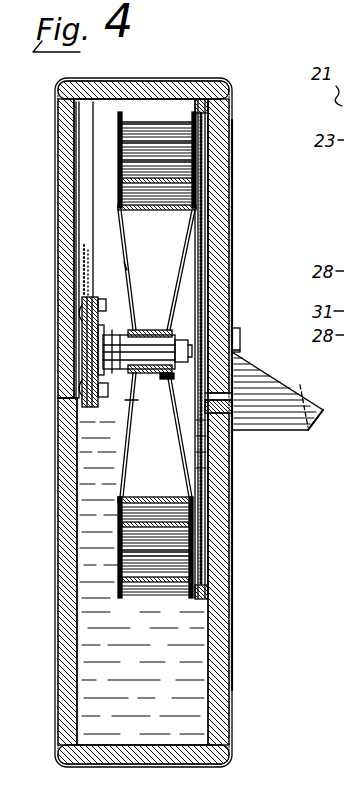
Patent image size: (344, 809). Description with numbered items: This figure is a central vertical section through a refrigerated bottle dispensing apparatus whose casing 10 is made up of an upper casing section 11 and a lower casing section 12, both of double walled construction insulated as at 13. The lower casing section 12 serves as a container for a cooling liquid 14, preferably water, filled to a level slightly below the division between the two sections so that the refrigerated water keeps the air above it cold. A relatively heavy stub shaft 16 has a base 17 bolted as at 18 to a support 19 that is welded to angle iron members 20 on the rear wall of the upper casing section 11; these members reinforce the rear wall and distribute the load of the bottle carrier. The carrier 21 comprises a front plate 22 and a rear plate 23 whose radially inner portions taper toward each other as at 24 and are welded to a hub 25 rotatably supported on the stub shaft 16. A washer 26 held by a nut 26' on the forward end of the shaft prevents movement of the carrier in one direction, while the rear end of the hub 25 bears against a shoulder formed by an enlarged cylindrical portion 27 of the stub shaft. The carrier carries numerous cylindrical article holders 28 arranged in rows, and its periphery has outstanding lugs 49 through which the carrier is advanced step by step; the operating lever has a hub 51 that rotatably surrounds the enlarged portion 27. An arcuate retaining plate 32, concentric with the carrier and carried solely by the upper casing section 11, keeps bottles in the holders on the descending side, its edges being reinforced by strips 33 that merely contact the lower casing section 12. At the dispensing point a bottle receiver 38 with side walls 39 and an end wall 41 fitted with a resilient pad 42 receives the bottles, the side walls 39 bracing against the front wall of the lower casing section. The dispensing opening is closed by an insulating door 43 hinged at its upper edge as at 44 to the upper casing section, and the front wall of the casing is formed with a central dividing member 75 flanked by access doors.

The casing 10 is at (51, 221).
The upper casing section 11 is at (55, 104).
The lower casing section 12 is at (232, 660).
The insulation 13 is at (131, 85).
The cooling liquid 14 is at (85, 510).
The stub shaft 16 is at (151, 343).
The base 17 is at (92, 403).
The bolts 18 is at (109, 297).
The support 19 is at (90, 335).
The angle iron members 20 is at (87, 160).
The carrier 21 is at (112, 166).
The front plate 22 is at (190, 600).
The rear plate 23 is at (122, 600).
The tapered portions 24 is at (124, 262).
The hub 25 is at (148, 378).
The washer 26 is at (181, 391).
The nut 26' is at (188, 334).
The enlarged cylindrical portion 27 is at (137, 323).
The article holders 28 is at (154, 133).
The retaining plate 32 is at (202, 97).
The reinforcing strips 33 is at (213, 93).
The bottle receiver 38 is at (295, 432).
The side walls 39 is at (252, 372).
The end wall 41 is at (322, 423).
The resilient pad 42 is at (308, 396).
The door 43 is at (243, 350).
The hinge 44 is at (238, 338).
The lugs 49 is at (191, 80).
The lever hub 51 is at (146, 420).
The central dividing member 75 is at (232, 207).